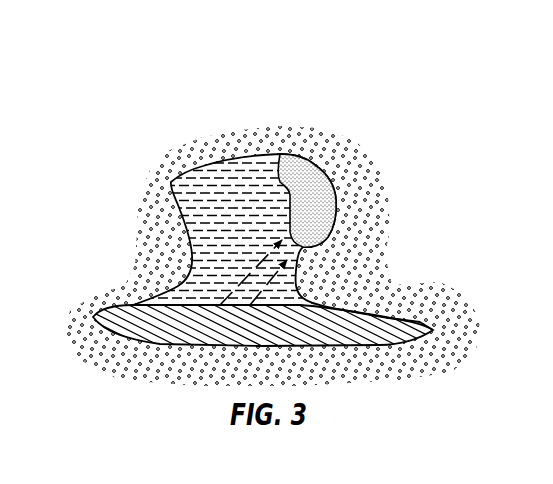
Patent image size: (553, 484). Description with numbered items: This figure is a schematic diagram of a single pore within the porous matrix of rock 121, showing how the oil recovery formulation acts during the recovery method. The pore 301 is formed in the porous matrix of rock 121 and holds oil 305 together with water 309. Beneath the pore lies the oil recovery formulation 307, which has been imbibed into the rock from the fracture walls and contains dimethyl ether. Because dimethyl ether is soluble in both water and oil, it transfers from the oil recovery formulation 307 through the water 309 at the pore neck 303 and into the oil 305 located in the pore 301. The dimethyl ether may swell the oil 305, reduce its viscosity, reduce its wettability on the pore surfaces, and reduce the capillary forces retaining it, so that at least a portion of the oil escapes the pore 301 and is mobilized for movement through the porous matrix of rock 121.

The porous matrix of rock 121 is at (273, 138).
The pore 301 is at (340, 207).
The pore neck 303 is at (297, 282).
The oil 305 is at (317, 185).
The oil recovery formulation 307 is at (433, 330).
The water 309 is at (203, 217).